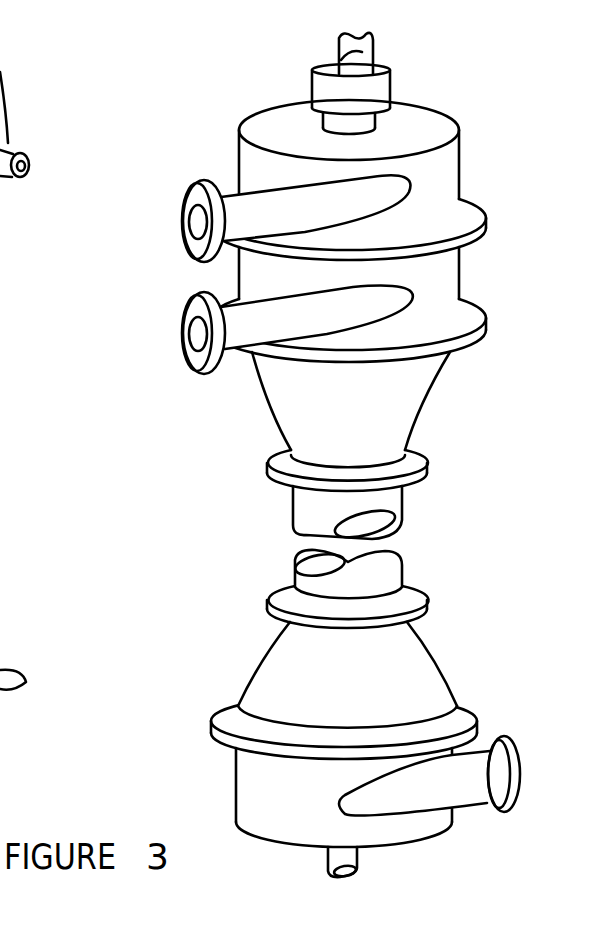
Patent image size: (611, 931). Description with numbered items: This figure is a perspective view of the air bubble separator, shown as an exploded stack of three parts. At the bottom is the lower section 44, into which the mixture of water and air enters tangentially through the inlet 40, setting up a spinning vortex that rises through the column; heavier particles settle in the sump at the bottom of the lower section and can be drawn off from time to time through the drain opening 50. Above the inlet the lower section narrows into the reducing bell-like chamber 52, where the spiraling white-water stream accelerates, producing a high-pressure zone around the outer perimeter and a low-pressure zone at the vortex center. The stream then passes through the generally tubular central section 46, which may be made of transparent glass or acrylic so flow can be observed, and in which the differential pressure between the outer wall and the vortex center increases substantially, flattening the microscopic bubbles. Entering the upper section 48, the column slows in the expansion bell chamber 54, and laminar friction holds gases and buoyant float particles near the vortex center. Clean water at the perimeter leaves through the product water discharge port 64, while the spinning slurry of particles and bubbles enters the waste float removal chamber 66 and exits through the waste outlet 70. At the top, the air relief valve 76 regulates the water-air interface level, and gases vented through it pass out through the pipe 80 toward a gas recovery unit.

The inlet 40 is at (512, 770).
The lower section 44 is at (214, 643).
The central section 46 is at (388, 497).
The upper section 48 is at (528, 216).
The drain opening 50 is at (347, 870).
The reducing bell-like chamber 52 is at (427, 695).
The expansion bell chamber 54 is at (403, 393).
The product water discharge port 64 is at (180, 322).
The waste float removal chamber 66 is at (433, 172).
The waste outlet 70 is at (182, 208).
The air relief valve 76 is at (378, 93).
The pipe 80 is at (353, 48).